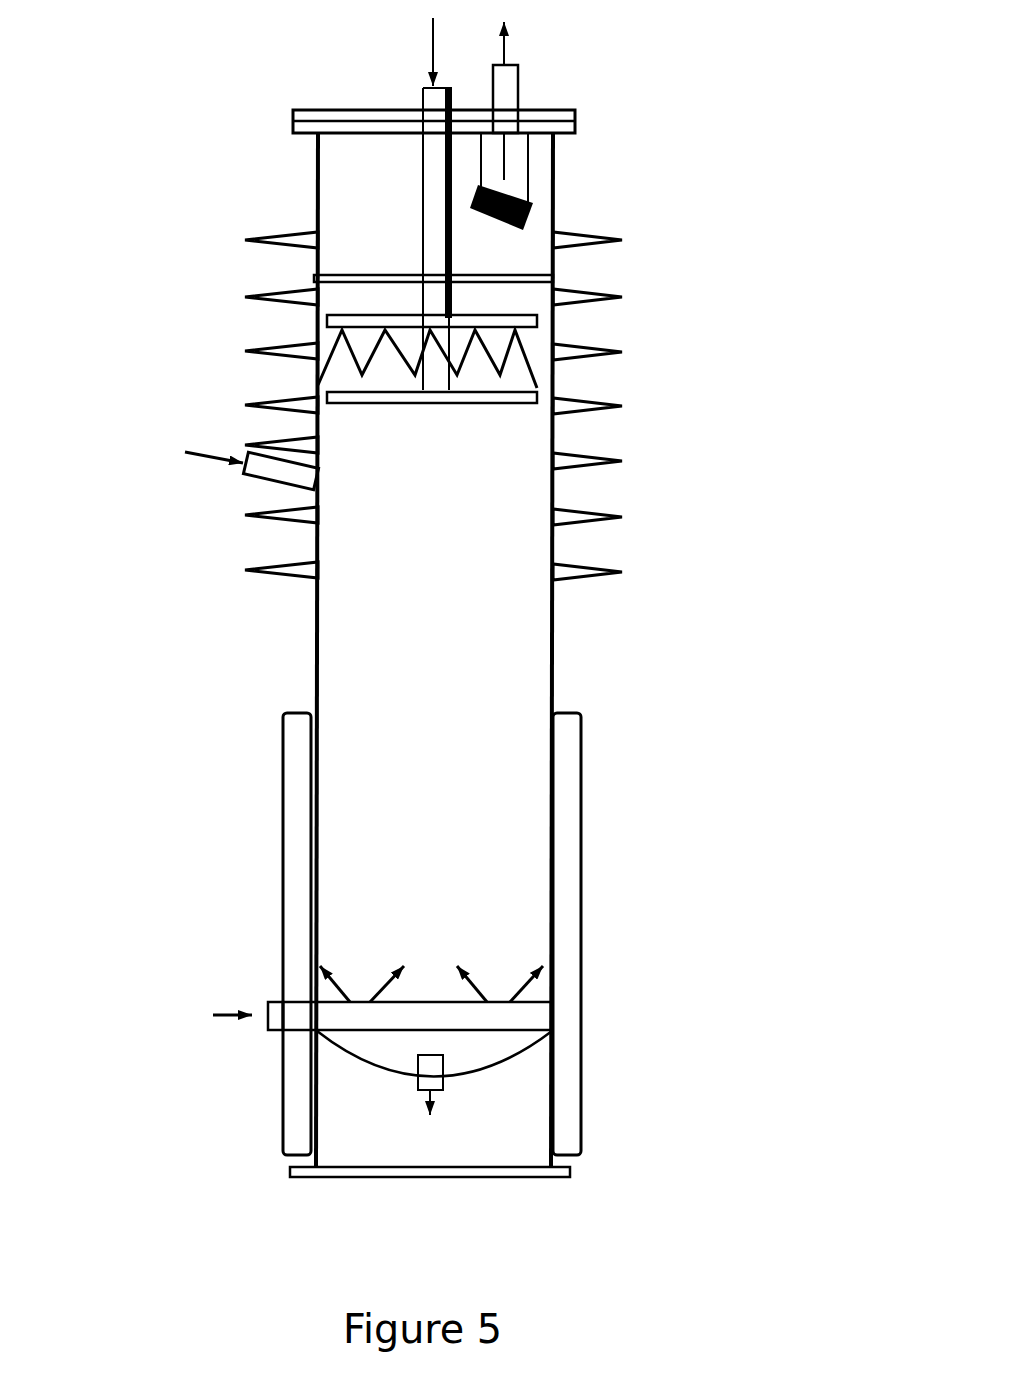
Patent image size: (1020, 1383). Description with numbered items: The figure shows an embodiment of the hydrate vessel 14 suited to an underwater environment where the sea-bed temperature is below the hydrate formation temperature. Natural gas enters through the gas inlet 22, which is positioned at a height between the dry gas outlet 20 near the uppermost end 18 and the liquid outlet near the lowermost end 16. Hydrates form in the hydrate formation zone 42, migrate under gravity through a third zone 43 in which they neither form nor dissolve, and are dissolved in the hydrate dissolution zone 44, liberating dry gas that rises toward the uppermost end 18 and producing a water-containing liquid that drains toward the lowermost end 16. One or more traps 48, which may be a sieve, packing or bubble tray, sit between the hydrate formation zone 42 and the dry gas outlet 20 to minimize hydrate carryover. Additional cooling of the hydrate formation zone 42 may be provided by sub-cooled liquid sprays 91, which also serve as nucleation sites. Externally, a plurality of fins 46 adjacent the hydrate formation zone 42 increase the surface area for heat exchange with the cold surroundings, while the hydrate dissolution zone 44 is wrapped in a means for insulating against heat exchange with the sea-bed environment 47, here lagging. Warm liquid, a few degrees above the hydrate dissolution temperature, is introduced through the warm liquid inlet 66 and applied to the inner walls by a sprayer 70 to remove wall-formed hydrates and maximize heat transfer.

The hydrate vessel 14 is at (682, 532).
The lowermost end 16 is at (592, 1091).
The uppermost end 18 is at (587, 180).
The dry gas outlet 20 is at (519, 98).
The gas inlet 22 is at (423, 88).
The hydrate formation zone 42 is at (520, 437).
The third zone 43 is at (482, 652).
The hydrate dissolution zone 44 is at (517, 872).
The fins 46 is at (245, 350).
The means for insulating against heat exchange with the sea-bed environment 47 is at (283, 742).
The trap 48 is at (553, 272).
The warm liquid inlet 66 is at (268, 1030).
The sprayer 70 is at (520, 1030).
The sub-cooled liquid spray 91 is at (525, 357).